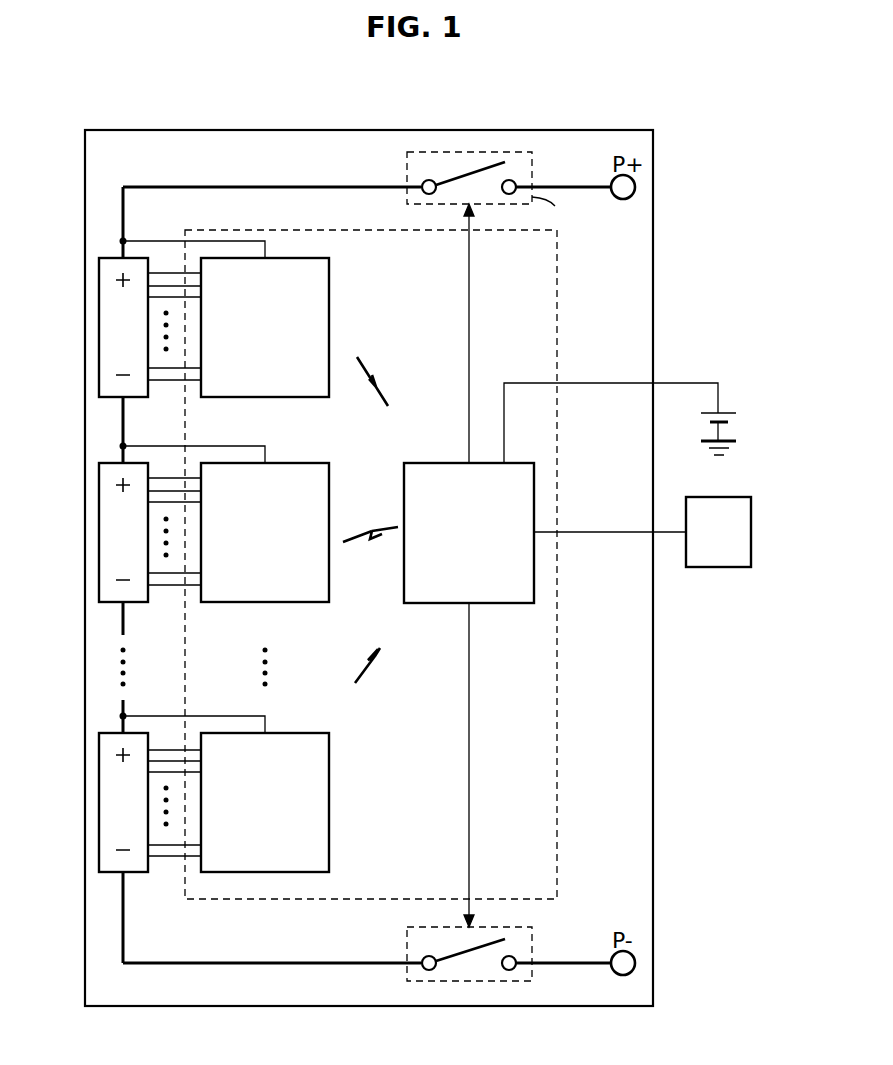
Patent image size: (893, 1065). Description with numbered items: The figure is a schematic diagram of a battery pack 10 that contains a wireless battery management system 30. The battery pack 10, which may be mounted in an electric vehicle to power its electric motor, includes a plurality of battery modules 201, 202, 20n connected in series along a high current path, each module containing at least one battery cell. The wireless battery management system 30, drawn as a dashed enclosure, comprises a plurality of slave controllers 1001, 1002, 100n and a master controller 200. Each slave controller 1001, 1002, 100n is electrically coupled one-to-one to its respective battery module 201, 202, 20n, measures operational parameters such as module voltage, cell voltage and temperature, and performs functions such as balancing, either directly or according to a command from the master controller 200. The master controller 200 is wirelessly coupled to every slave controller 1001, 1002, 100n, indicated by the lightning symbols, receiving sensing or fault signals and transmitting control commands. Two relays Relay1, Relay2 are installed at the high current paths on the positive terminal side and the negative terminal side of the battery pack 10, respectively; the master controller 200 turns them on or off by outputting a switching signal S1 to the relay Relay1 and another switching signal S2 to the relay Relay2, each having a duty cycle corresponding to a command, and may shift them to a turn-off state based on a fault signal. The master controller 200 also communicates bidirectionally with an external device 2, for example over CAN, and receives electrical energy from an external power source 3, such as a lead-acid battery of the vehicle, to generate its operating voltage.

The battery pack 10 is at (168, 128).
The battery module 201 is at (100, 323).
The battery module 202 is at (100, 527).
The battery module 20n is at (100, 798).
The slave controller 1001 is at (300, 398).
The slave controller 1002 is at (300, 462).
The slave controller 100n is at (297, 733).
The master controller 200 is at (449, 461).
The wireless battery management system 30 is at (557, 331).
The external power source 3 is at (752, 420).
The external device 2 is at (729, 497).
The switching signal S1 is at (470, 319).
The switching signal S2 is at (470, 728).
The relay Relay1 is at (407, 153).
The relay Relay2 is at (407, 934).